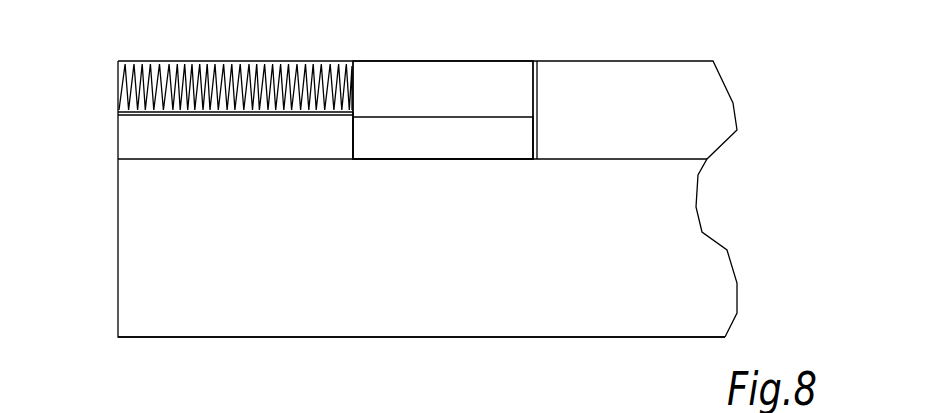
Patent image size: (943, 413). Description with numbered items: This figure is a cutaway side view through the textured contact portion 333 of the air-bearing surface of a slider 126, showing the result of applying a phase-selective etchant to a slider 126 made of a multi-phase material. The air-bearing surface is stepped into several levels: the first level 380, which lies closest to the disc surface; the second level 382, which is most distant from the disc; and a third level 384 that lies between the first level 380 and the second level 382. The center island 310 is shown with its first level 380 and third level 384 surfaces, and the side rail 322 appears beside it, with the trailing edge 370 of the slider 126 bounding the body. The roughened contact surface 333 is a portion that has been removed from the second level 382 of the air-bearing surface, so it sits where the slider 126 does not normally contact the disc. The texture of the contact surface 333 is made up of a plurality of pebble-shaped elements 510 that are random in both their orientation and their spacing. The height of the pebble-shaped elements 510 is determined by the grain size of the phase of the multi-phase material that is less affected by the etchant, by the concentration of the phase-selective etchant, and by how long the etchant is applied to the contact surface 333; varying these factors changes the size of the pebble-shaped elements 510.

The slider 126 is at (517, 323).
The center island 310 is at (447, 61).
The second side rail 322 is at (603, 61).
The contact portion 333 is at (167, 90).
The trailing edge 370 is at (117, 273).
The first level 380 is at (471, 61).
The second level 382 is at (416, 159).
The third level 384 is at (389, 117).
The pebble-shaped elements 510 is at (327, 61).